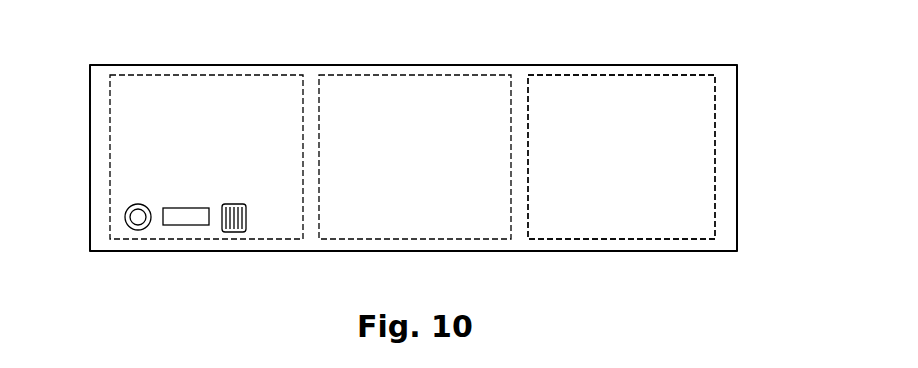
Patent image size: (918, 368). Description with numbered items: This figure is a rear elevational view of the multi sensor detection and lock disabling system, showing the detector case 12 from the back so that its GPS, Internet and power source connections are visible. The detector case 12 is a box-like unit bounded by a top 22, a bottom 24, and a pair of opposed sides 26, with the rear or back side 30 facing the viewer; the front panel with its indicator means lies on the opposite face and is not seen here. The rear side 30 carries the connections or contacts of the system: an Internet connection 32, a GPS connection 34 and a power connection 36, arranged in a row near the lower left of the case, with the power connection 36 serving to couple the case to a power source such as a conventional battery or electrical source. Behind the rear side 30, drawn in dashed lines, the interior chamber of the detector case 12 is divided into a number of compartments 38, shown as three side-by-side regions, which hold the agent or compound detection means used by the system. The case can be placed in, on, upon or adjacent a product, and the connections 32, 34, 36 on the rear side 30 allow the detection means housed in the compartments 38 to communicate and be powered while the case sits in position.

The detector case 12 is at (737, 65).
The top 22 is at (586, 64).
The bottom 24 is at (700, 251).
The opposed sides 26 is at (90, 105).
The rear side 30 is at (730, 115).
The Internet connection 32 is at (127, 223).
The GPS connection 34 is at (173, 225).
The power connection 36 is at (240, 232).
The compartments 38 is at (320, 133).